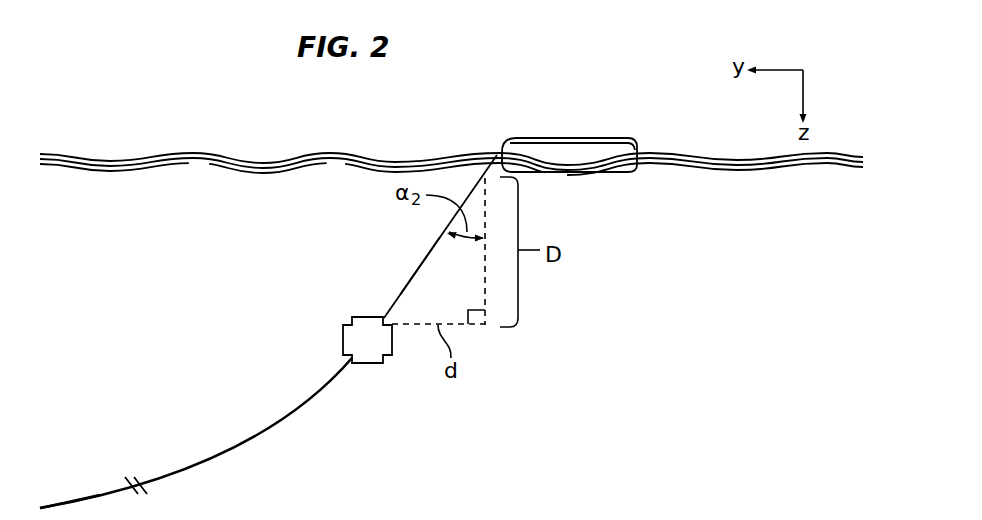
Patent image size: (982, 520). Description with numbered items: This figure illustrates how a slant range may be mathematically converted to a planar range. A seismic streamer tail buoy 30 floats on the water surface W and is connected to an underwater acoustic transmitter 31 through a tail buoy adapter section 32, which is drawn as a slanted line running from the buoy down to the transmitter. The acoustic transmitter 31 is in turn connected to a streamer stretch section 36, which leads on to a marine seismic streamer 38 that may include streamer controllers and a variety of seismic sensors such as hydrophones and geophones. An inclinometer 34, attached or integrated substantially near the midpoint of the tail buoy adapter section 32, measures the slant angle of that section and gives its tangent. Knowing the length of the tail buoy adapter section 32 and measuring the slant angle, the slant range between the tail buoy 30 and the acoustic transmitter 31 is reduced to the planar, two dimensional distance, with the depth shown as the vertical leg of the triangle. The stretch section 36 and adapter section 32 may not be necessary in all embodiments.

The seismic streamer tail buoy 30 is at (589, 138).
The underwater acoustic transmitter 31 is at (352, 322).
The tail buoy adapter section 32 is at (447, 233).
The inclinometer 34 is at (423, 265).
The streamer stretch section 36 is at (225, 448).
The marine seismic streamer 38 is at (83, 498).
The water surface W is at (191, 152).